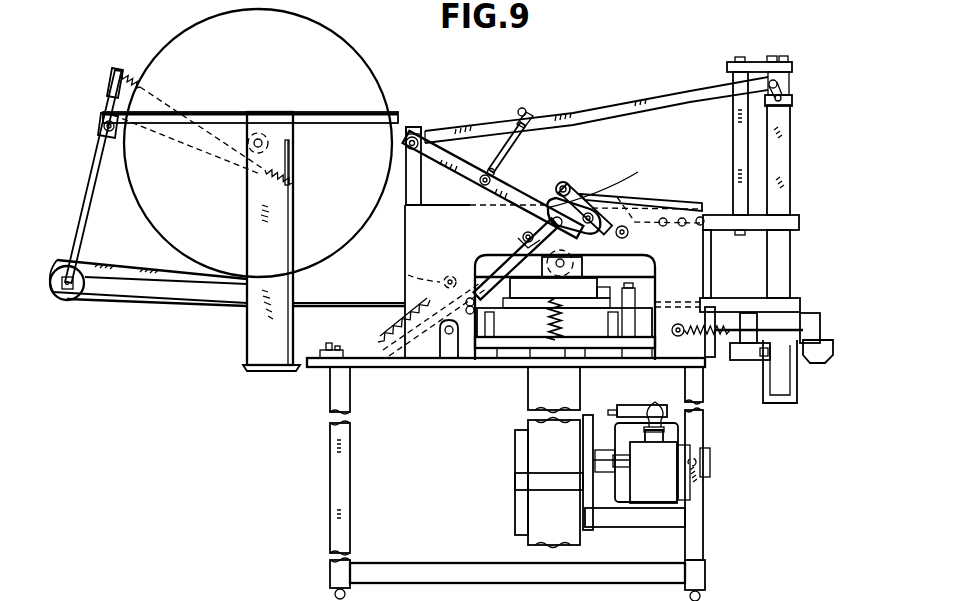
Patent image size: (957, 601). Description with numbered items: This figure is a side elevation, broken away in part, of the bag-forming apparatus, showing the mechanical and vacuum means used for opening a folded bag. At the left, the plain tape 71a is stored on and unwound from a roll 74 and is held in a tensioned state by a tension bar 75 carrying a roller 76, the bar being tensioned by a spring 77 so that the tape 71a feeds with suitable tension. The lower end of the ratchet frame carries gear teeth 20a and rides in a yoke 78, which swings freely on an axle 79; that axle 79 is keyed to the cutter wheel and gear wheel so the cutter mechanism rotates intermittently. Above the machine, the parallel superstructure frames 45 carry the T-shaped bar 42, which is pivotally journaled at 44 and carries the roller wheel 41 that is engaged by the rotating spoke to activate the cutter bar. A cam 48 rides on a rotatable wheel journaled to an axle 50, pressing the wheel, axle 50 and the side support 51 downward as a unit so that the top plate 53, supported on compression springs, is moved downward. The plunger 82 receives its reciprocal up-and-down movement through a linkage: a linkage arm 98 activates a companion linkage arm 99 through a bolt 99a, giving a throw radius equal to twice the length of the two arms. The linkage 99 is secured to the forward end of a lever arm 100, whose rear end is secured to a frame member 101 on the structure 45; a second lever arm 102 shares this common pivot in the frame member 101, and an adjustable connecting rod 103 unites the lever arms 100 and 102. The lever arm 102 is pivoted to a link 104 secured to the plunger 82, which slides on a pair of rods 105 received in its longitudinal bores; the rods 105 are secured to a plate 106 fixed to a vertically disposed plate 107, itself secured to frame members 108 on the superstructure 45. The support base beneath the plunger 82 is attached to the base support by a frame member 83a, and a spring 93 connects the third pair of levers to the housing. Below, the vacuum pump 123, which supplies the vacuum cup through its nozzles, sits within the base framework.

The gear teeth 20a is at (385, 340).
The roller wheel 41 is at (567, 184).
The T-shaped bar 42 is at (632, 203).
The pivot 44 is at (621, 240).
The superstructure frame 45 is at (407, 242).
The cam 48 is at (550, 192).
The axle 50 is at (565, 269).
The side support 51 is at (581, 270).
The top plate 53 is at (554, 297).
The plain tape 71a is at (147, 306).
The roll 74 is at (330, 40).
The tension bar 75 is at (91, 202).
The roller 76 is at (60, 300).
The spring 77 is at (125, 72).
The yoke 78 is at (408, 280).
The axle 79 is at (452, 272).
The plunger 82 is at (790, 156).
The frame member 83a is at (748, 275).
The spring 93 is at (660, 233).
The linkage arm 98 is at (585, 230).
The companion linkage arm 99 is at (580, 198).
The bolt 99a is at (642, 174).
The lever arm 100 is at (476, 145).
The frame member 101 is at (421, 127).
The second lever arm 102 is at (575, 117).
The adjustable connecting rod 103 is at (509, 143).
The link 104 is at (792, 96).
The rods 105 is at (748, 62).
The plate 106 is at (763, 65).
The vertically disposed plate 107 is at (733, 138).
The frame members 108 is at (728, 215).
The vacuum pump 123 is at (667, 486).